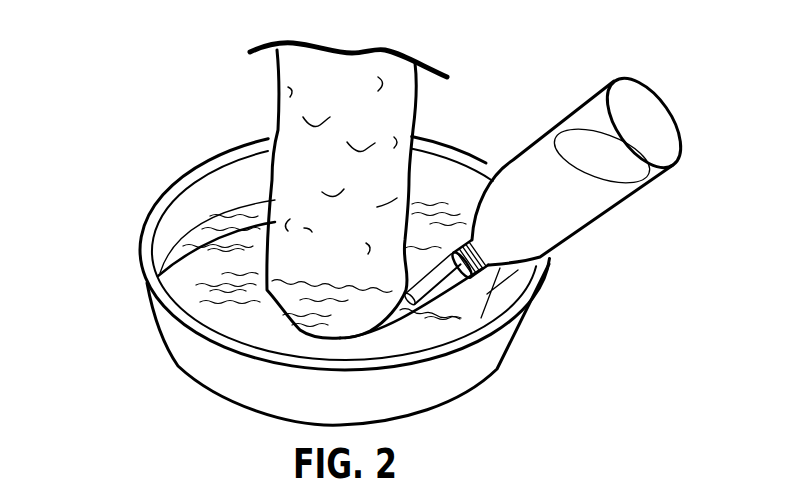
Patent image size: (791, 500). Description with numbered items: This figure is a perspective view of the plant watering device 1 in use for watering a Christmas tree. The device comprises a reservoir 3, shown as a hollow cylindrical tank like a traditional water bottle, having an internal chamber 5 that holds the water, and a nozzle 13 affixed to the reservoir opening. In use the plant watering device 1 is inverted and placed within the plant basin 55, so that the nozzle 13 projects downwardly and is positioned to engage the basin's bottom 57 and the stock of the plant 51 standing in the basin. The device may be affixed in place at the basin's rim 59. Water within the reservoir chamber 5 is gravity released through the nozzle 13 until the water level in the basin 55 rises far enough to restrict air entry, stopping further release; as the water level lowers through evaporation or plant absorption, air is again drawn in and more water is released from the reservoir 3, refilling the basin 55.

The plant watering device 1 is at (549, 155).
The reservoir 3 is at (582, 107).
The chamber 5 is at (570, 193).
The nozzle 13 is at (451, 240).
The plant 51 is at (277, 112).
The basin 55 is at (170, 342).
The basin's bottom 57 is at (163, 257).
The basin's rim 59 is at (160, 203).